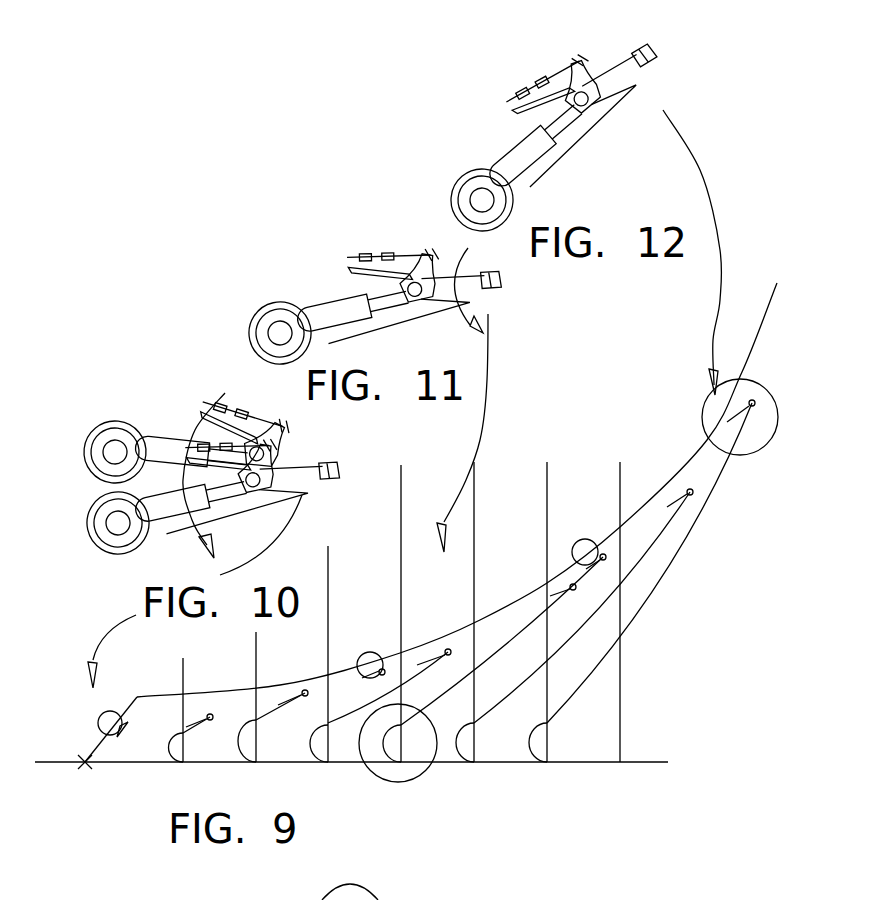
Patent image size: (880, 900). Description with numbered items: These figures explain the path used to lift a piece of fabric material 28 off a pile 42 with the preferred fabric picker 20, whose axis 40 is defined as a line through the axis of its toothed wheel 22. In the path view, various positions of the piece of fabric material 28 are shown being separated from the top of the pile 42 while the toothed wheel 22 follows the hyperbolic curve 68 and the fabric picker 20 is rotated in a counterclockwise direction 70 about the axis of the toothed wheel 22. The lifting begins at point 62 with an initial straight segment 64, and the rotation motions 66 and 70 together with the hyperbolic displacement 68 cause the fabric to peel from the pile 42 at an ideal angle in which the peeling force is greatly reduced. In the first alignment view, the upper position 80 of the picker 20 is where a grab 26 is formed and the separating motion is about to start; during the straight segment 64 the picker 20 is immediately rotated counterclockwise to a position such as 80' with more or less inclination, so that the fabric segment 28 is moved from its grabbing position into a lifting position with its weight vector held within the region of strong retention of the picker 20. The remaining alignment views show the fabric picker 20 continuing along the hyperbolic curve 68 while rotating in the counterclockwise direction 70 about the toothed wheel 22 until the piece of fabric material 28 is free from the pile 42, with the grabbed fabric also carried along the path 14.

In FIG. 9, the spool 14 is at (773, 440).
In FIG. 12, the fabric picker 20 is at (547, 122).
In FIG. 11, the fabric picker 20 is at (373, 277).
In FIG. 10, the fabric picker 20 is at (219, 475).
In FIG. 12, the toothed wheel 22 is at (633, 60).
In FIG. 11, the toothed wheel 22 is at (491, 279).
In FIG. 10, the toothed wheel 22 is at (329, 470).
In FIG. 9, the grab 26 is at (208, 715).
In FIG. 9, the piece of fabric material 28 is at (167, 750).
In FIG. 12, the axis 40 is at (579, 116).
In FIG. 9, the pile 42 is at (402, 740).
In FIG. 9, the point 62 is at (85, 767).
In FIG. 9, the straight segment 64 is at (97, 745).
In FIG. 10, the rotation motion 66 is at (202, 533).
In FIG. 9, the rotation motion 66 is at (100, 715).
In FIG. 9, the hyperbolic curve 68 is at (665, 490).
In FIG. 11, the counterclockwise direction 70 is at (452, 318).
In FIG. 9, the counterclockwise direction 70 is at (365, 655).
In FIG. 10, the upper position 80 is at (186, 437).
In FIG. 10, the rotated position 80' is at (211, 496).